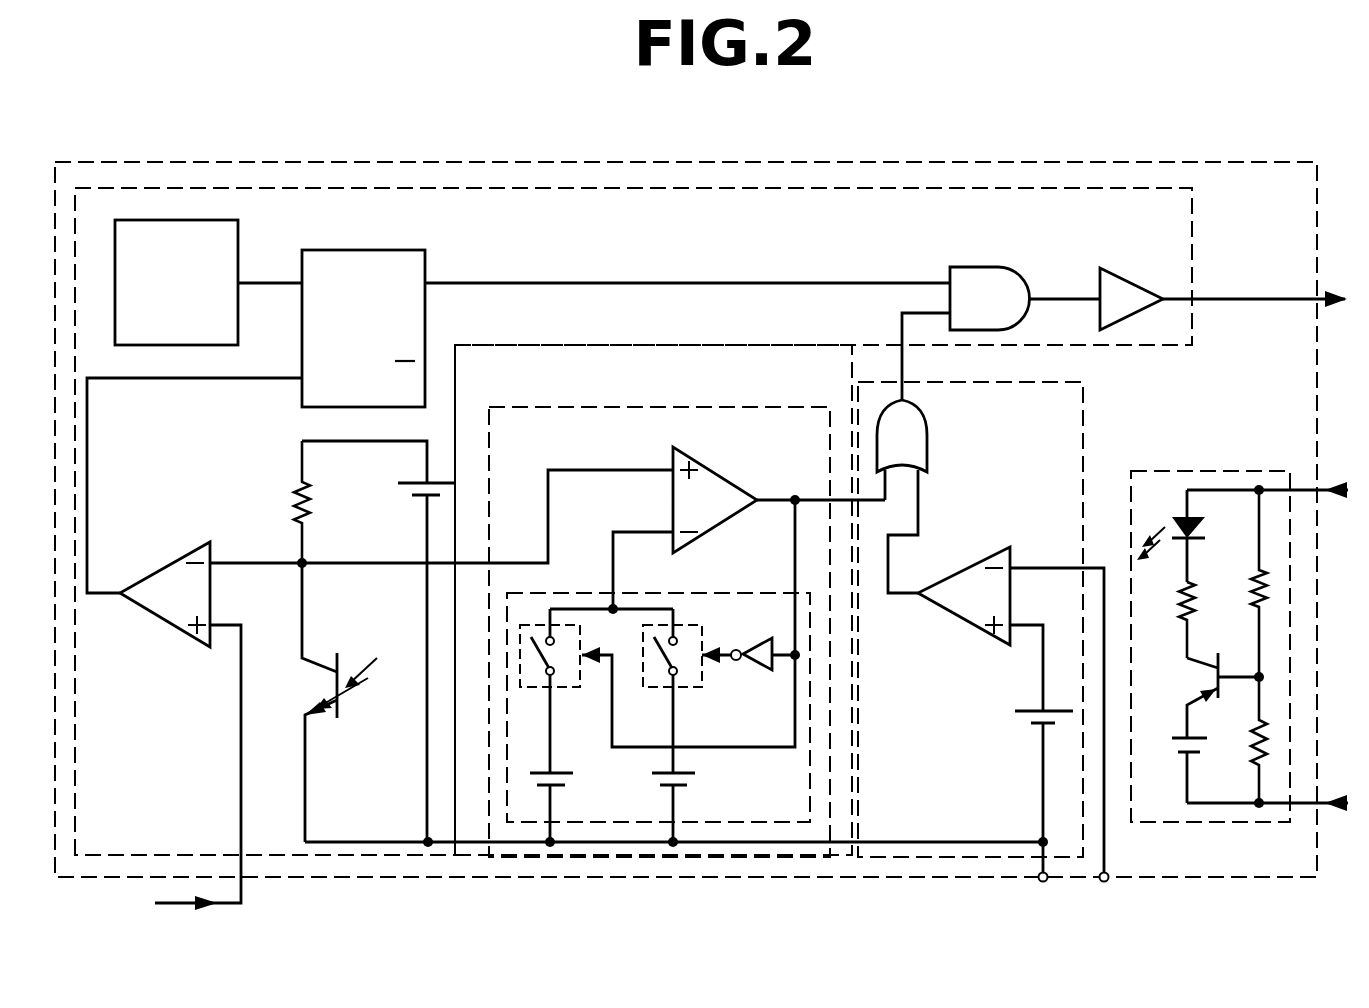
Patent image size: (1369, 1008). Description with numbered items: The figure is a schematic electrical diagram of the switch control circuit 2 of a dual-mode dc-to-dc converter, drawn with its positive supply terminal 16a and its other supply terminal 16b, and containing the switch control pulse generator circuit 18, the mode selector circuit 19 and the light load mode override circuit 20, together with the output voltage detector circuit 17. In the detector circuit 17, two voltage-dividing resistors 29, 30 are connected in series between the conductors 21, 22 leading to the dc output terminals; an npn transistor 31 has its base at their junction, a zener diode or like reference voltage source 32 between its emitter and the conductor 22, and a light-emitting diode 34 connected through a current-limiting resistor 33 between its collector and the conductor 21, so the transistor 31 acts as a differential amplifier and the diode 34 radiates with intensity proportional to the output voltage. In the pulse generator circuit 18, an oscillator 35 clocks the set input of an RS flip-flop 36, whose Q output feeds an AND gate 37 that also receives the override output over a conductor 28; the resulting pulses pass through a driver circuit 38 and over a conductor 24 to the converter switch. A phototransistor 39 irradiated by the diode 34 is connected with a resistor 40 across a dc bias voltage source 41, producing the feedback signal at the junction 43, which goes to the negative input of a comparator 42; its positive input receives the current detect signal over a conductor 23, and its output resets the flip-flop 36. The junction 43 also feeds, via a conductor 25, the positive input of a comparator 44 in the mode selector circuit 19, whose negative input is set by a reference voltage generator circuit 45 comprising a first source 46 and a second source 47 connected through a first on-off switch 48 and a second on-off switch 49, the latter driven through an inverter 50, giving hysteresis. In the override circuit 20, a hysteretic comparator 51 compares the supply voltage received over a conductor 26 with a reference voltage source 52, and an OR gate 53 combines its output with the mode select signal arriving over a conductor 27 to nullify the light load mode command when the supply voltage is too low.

The switch control circuit 2 is at (1322, 183).
The positive supply terminal 16a is at (1150, 900).
The supply terminal 16b is at (1041, 898).
The output voltage detector circuit 17 is at (1173, 471).
The switch control pulse generator circuit 18 is at (1192, 257).
The mode selector circuit 19 is at (630, 407).
The light load mode override circuit 20 is at (1083, 383).
The conductor 21 is at (1325, 488).
The conductor 22 is at (1332, 800).
The conductor 23 is at (243, 897).
The conductor 24 is at (1322, 290).
The conductor 25 is at (470, 563).
The conductor 26 is at (1104, 830).
The conductor 27 is at (838, 496).
The conductor 28 is at (903, 365).
The voltage-dividing resistor 29 is at (1252, 600).
The voltage-dividing resistor 30 is at (1250, 745).
The npn transistor 31 is at (1222, 664).
The reference voltage source 32 is at (1175, 740).
The current-limiting resistor 33 is at (1180, 600).
The light-emitting diode 34 is at (1205, 530).
The oscillator 35 is at (240, 232).
The RS flip-flop 36 is at (358, 250).
The AND gate 37 is at (983, 267).
The driver circuit 38 is at (1118, 268).
The phototransistor 39 is at (330, 652).
The resistor 40 is at (292, 495).
The dc bias voltage source 41 is at (400, 483).
The comparator 42 is at (152, 560).
The junction 43 is at (298, 558).
The comparator 44 is at (723, 466).
The reference voltage generator circuit 45 is at (718, 595).
The first reference voltage source 46 is at (562, 773).
The second reference voltage source 47 is at (697, 773).
The first on-off switch 48 is at (576, 687).
The second on-off switch 49 is at (703, 625).
The inverter 50 is at (762, 670).
The hysteretic comparator 51 is at (948, 610).
The reference voltage source 52 is at (1043, 690).
The OR gate 53 is at (927, 445).